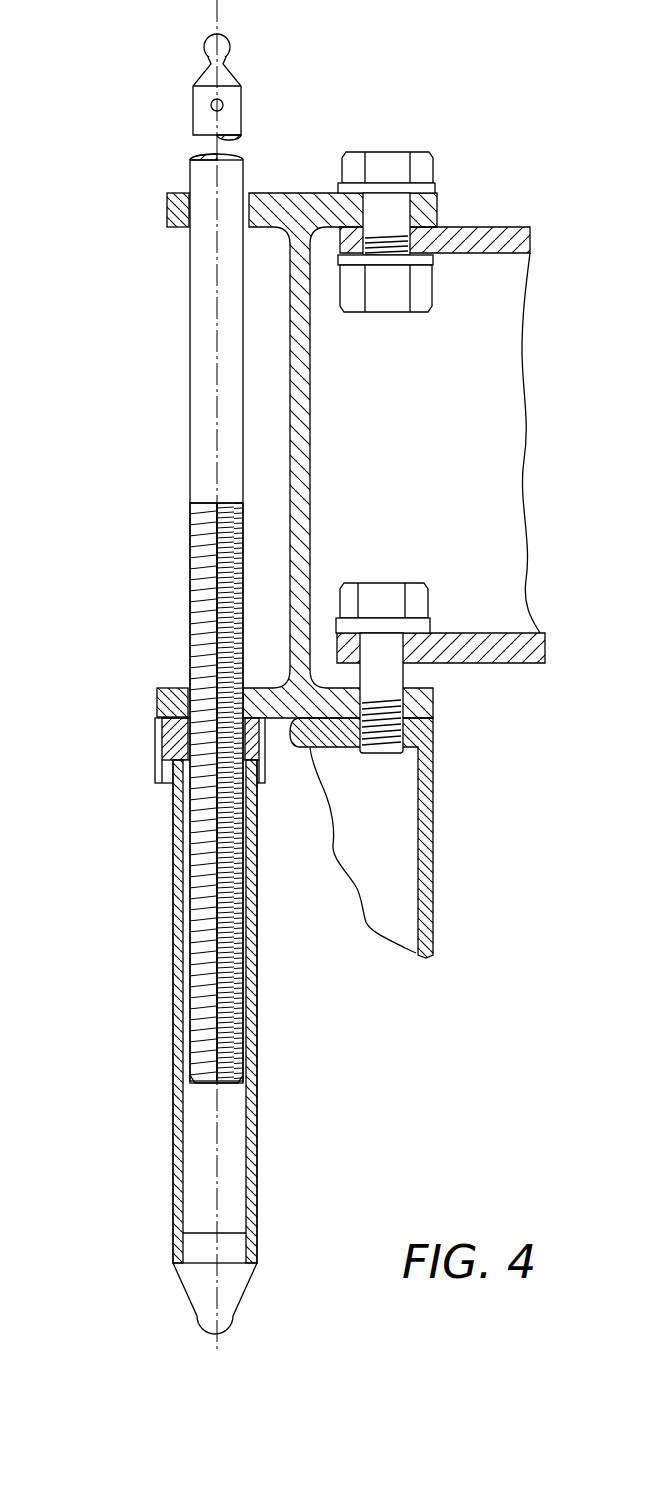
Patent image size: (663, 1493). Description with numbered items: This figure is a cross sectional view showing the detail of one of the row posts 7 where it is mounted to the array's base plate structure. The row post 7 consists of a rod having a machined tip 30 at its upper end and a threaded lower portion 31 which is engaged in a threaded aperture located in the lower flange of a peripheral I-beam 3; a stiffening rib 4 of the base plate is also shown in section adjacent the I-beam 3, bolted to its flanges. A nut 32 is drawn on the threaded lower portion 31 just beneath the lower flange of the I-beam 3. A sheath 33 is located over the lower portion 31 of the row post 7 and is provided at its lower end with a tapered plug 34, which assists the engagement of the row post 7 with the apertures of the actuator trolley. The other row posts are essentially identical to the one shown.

The I-beam 3 is at (284, 194).
The stiffening rib 4 is at (468, 241).
The row post 7 is at (191, 372).
The machined tip 30 is at (230, 50).
The lower portion 31 is at (192, 590).
The lock nut 32 is at (196, 688).
The sheath 33 is at (253, 1153).
The tapered plug 34 is at (192, 1286).